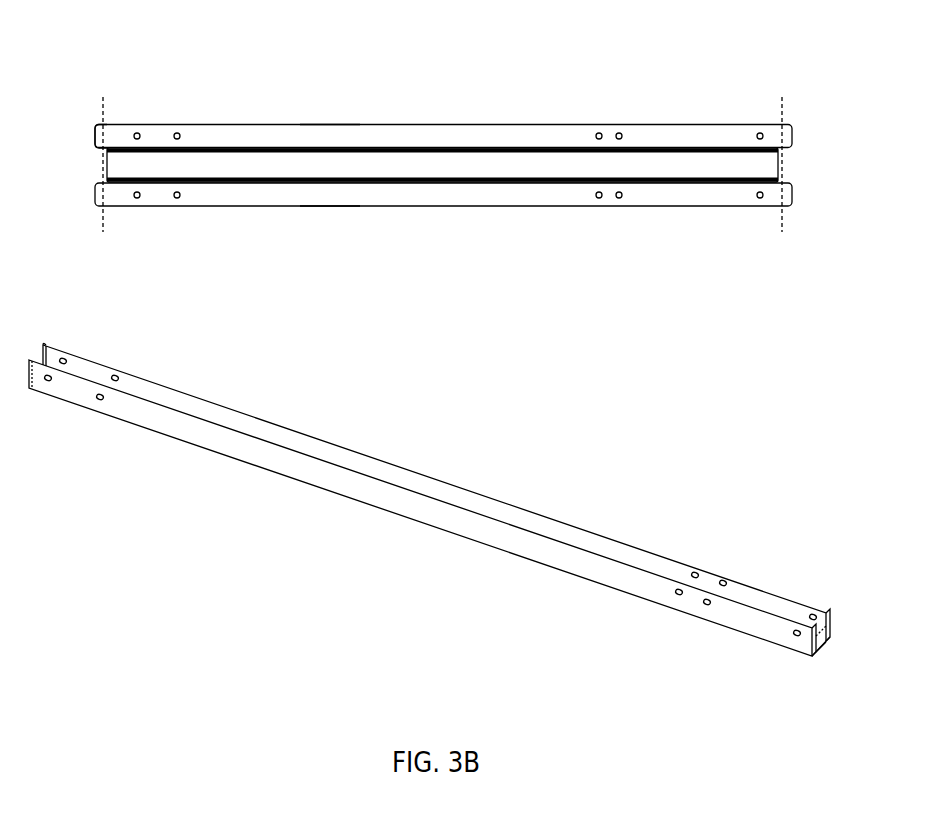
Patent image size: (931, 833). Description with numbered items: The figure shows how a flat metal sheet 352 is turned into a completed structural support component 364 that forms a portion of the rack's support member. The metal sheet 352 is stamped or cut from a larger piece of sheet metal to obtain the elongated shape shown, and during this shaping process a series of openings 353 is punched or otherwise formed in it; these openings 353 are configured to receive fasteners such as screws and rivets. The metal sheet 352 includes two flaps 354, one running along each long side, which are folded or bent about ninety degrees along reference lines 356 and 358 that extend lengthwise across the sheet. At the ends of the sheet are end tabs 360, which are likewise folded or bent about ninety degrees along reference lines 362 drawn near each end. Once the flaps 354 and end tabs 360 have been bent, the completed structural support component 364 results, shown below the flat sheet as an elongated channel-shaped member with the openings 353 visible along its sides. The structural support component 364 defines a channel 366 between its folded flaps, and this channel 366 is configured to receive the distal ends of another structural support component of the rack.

The flat metal sheet 352 is at (164, 67).
The openings 353 is at (598, 132).
The flaps 354 is at (344, 146).
The reference line 356 is at (107, 150).
The reference line 358 is at (107, 178).
The end tabs 360 is at (97, 125).
The reference lines 362 is at (442, 163).
The structural support component 364 is at (159, 353).
The channel 366 is at (439, 481).